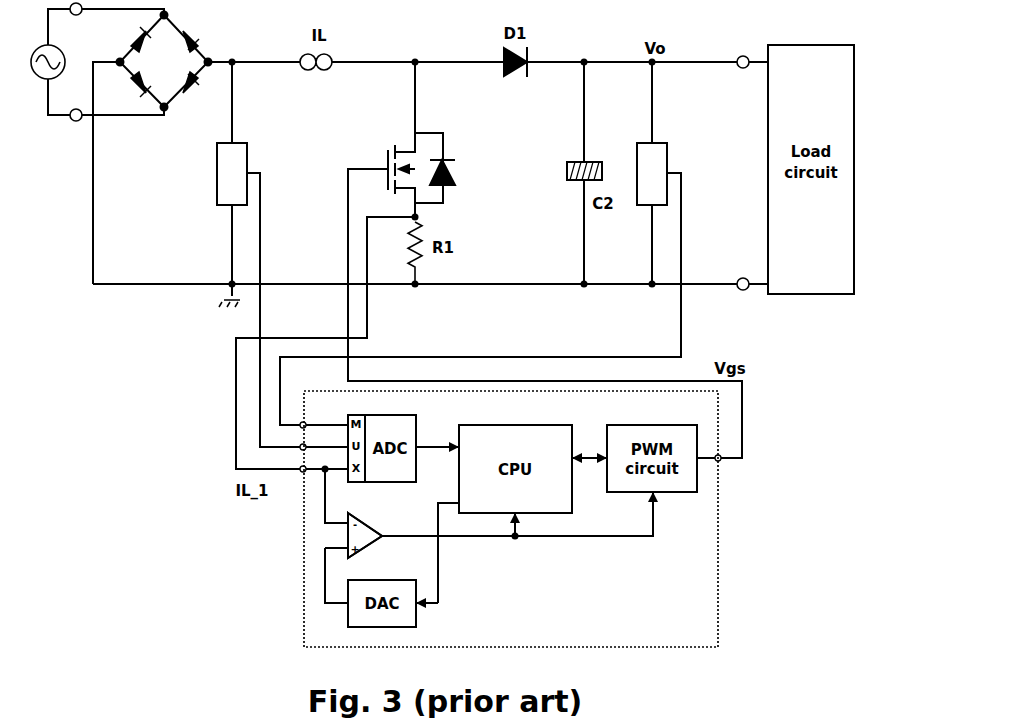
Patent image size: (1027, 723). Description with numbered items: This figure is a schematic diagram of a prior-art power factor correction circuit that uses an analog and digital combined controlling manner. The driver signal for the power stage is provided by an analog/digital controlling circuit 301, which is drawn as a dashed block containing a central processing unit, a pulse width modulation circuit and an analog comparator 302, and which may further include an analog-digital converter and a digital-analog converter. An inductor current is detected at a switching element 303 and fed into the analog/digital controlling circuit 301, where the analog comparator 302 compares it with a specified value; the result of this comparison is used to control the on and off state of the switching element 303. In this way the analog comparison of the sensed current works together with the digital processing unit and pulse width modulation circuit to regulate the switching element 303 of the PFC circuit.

The analog/digital controlling circuit 301 is at (718, 598).
The analog comparator 302 is at (348, 530).
The switching element 303 is at (392, 140).